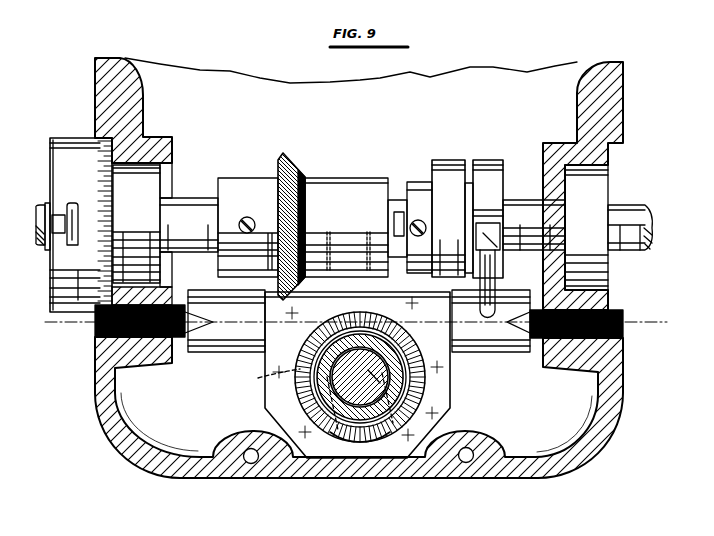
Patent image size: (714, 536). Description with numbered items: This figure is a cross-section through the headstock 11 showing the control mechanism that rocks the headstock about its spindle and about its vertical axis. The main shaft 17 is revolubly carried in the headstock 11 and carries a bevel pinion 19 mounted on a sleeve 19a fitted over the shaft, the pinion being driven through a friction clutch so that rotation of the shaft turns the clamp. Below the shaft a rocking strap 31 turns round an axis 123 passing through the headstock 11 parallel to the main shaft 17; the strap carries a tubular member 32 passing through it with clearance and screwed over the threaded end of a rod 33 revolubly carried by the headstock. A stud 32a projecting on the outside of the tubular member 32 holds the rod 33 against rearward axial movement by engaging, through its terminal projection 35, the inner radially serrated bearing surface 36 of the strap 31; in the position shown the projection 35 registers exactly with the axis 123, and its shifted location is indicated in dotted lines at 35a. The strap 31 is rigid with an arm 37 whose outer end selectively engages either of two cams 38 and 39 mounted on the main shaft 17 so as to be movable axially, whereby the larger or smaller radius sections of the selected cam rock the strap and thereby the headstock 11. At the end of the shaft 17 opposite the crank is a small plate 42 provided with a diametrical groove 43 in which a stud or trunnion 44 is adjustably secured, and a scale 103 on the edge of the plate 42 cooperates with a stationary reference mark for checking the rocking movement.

The headstock 11 is at (133, 97).
The main shaft 17 is at (187, 203).
The bevel pinion 19 is at (290, 163).
The sleeve 19a is at (342, 183).
The rocking strap 31 is at (273, 341).
The tubular member 32 is at (323, 379).
The stud 32a is at (343, 336).
The rod 33 is at (396, 387).
The terminal projection 35 is at (408, 333).
The shifted location of projection 35a is at (352, 440).
The radially serrated bearing surface 36 is at (269, 370).
The arm 37 is at (502, 256).
The cam 38 is at (443, 170).
The cam 39 is at (488, 163).
The small plate 42 is at (68, 145).
The diametrical groove 43 is at (71, 203).
The stud or trunnion 44 is at (39, 208).
The scale 103 is at (98, 247).
The axis 123 is at (656, 325).